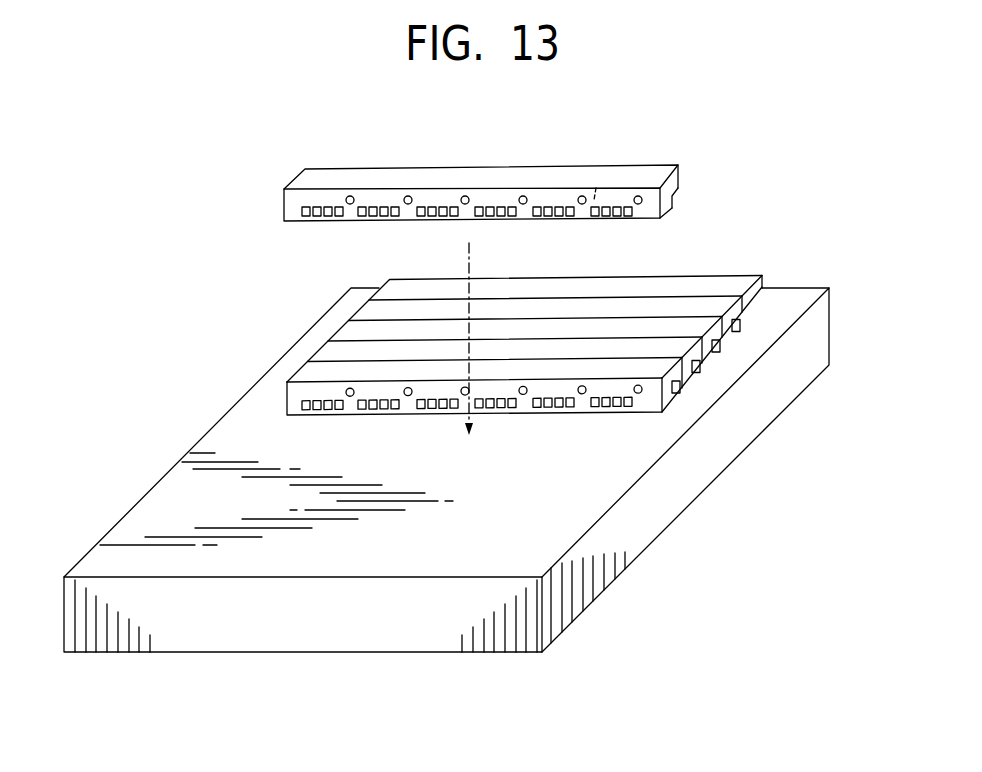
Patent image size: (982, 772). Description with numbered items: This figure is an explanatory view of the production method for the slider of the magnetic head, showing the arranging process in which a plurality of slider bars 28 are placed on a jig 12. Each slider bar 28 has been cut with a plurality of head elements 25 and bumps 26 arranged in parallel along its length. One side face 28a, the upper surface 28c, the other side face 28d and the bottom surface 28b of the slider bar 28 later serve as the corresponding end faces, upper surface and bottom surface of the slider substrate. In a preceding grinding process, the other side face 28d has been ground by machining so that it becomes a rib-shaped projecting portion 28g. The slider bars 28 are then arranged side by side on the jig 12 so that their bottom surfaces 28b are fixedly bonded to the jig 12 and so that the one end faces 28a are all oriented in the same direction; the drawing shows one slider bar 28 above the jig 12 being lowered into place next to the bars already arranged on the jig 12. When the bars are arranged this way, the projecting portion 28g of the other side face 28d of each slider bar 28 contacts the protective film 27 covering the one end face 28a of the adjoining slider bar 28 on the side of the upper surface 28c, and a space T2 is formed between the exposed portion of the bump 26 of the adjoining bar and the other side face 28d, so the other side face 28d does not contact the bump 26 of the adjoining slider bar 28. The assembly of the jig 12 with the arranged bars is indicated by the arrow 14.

The jig 12 is at (799, 303).
The assembly 14 is at (490, 440).
The slider bar 28 is at (491, 331).
The head element 25 is at (411, 196).
The bump 26 is at (397, 207).
The protective film 27 is at (650, 193).
The one side face 28a is at (596, 188).
The bottom surface 28b is at (668, 212).
The upper surface 28c is at (524, 194).
The other side face 28d is at (675, 198).
The projecting portion 28g is at (683, 172).
The space T2 is at (738, 332).